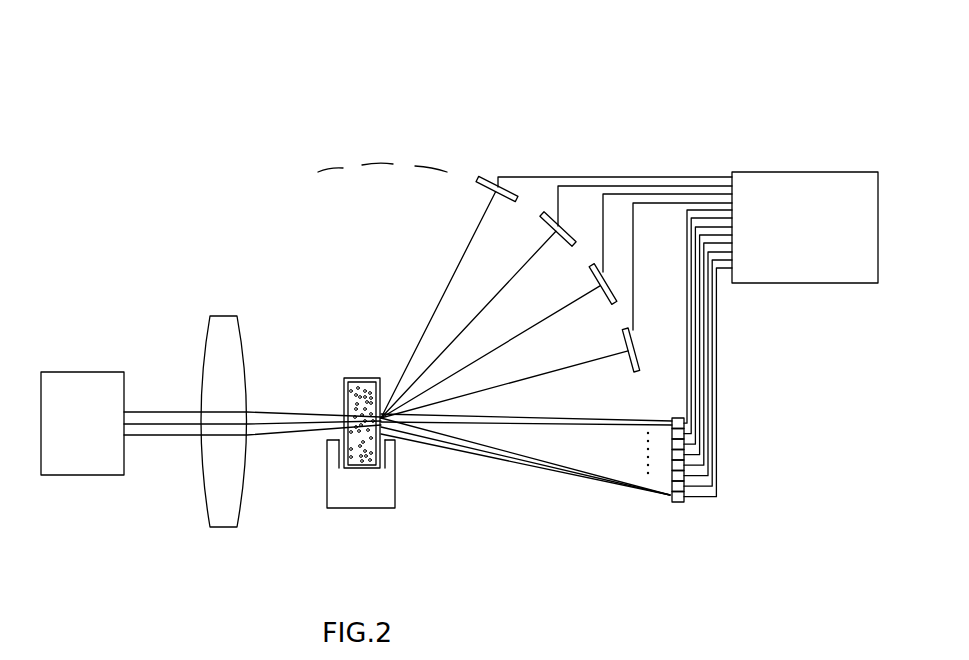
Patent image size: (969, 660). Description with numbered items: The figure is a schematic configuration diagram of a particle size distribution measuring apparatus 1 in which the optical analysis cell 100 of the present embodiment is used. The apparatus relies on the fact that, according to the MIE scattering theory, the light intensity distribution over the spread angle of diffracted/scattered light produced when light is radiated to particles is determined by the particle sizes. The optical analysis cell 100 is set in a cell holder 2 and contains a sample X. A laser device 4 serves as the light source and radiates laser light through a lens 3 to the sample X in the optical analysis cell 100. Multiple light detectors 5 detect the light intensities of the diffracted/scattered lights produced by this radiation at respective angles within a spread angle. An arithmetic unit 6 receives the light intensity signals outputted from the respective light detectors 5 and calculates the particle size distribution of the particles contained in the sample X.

The particle size distribution measuring apparatus 1 is at (104, 173).
The cell holder 2 is at (360, 510).
The lens 3 is at (221, 527).
The laser device 4 is at (82, 477).
The light detectors 5 is at (490, 178).
The arithmetic unit 6 is at (804, 172).
The optical analysis cell 100 is at (338, 387).
The sample X is at (348, 388).